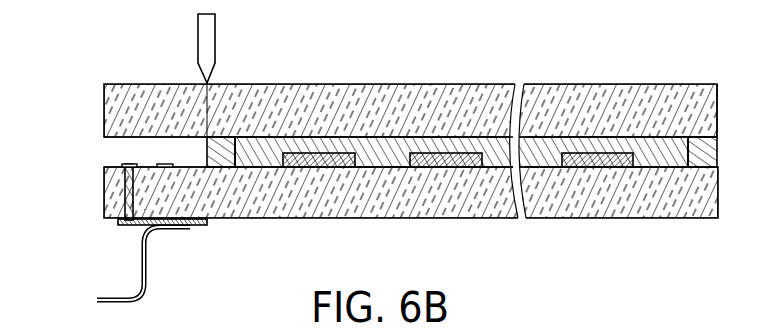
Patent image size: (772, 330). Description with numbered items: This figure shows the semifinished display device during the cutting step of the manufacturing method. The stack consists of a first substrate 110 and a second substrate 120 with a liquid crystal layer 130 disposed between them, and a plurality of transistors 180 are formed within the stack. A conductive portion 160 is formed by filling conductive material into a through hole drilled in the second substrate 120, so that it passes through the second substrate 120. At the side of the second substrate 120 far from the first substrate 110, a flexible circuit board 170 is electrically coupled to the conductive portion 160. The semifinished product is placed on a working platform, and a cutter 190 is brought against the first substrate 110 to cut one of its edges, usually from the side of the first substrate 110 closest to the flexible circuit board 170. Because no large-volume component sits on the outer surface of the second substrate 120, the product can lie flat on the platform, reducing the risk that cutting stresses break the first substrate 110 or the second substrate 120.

The first substrate 110 is at (653, 97).
The second substrate 120 is at (656, 205).
The liquid crystal layer 130 is at (546, 152).
The conductive portion 160 is at (128, 192).
The flexible circuit board 170 is at (140, 265).
The transistors 180 is at (593, 168).
The cutter 190 is at (204, 45).